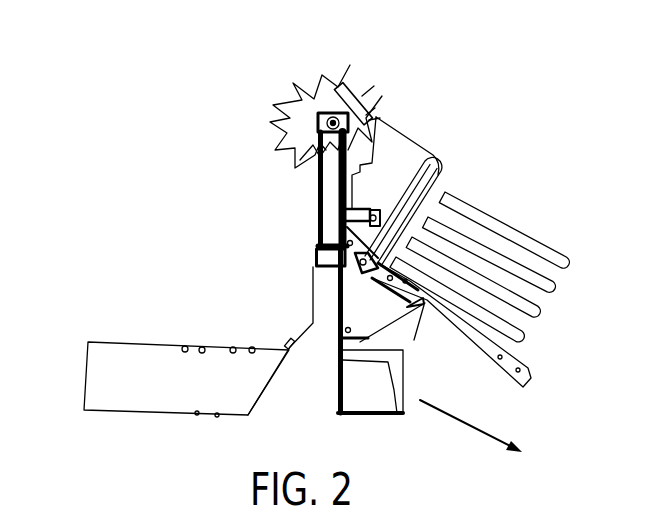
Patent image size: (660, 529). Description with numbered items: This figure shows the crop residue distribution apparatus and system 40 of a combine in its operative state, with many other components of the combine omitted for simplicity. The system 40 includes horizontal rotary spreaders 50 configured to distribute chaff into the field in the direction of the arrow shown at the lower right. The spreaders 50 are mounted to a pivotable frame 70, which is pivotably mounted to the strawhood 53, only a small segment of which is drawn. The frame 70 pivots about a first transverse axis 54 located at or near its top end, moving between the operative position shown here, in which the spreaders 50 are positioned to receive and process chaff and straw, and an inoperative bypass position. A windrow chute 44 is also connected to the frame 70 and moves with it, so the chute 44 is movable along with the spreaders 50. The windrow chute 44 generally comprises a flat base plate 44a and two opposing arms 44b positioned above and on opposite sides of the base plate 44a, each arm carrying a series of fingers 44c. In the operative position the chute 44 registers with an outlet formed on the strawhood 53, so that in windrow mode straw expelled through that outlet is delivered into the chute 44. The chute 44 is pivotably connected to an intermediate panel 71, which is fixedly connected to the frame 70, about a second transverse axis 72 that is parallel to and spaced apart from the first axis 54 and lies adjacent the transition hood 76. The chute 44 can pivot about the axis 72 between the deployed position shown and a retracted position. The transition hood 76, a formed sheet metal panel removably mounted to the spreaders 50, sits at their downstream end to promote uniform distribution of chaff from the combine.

The crop residue distribution apparatus and system 40 is at (150, 206).
The windrow chute 44 is at (445, 202).
The flat base plate 44a is at (532, 371).
The opposing arms 44b is at (510, 222).
The fingers 44c is at (483, 236).
The horizontal spreaders 50 is at (197, 352).
The strawhood 53 is at (297, 97).
The first transverse axis 54 is at (360, 92).
The pivotable frame 70 is at (318, 255).
The intermediate panel 71 is at (383, 314).
The second transverse axis 72 is at (362, 264).
The transition hood 76 is at (403, 363).